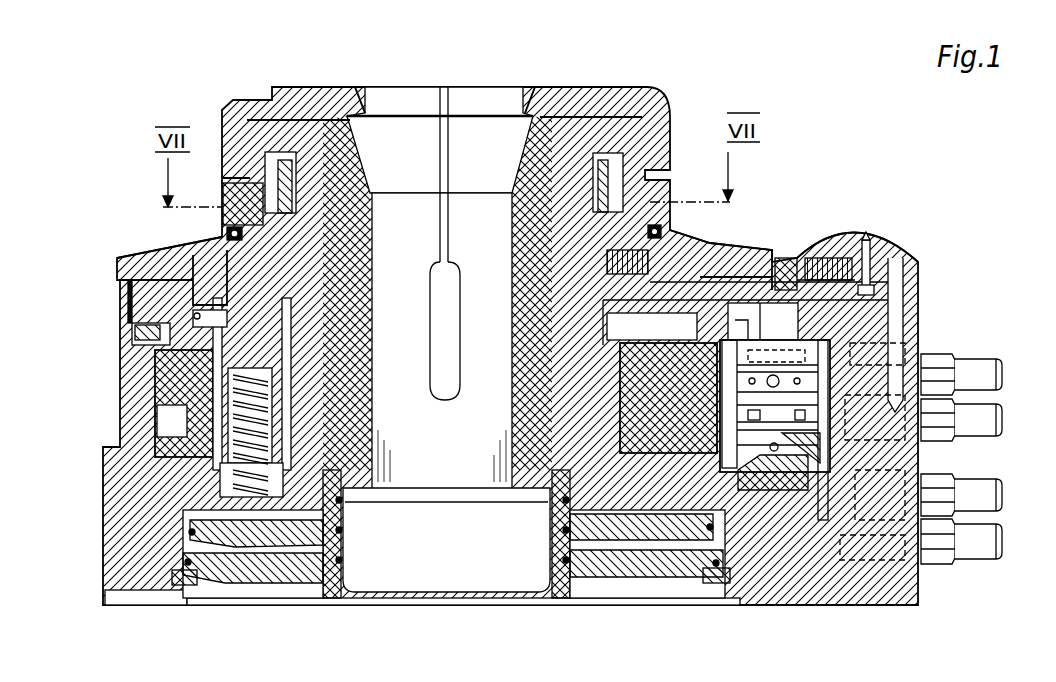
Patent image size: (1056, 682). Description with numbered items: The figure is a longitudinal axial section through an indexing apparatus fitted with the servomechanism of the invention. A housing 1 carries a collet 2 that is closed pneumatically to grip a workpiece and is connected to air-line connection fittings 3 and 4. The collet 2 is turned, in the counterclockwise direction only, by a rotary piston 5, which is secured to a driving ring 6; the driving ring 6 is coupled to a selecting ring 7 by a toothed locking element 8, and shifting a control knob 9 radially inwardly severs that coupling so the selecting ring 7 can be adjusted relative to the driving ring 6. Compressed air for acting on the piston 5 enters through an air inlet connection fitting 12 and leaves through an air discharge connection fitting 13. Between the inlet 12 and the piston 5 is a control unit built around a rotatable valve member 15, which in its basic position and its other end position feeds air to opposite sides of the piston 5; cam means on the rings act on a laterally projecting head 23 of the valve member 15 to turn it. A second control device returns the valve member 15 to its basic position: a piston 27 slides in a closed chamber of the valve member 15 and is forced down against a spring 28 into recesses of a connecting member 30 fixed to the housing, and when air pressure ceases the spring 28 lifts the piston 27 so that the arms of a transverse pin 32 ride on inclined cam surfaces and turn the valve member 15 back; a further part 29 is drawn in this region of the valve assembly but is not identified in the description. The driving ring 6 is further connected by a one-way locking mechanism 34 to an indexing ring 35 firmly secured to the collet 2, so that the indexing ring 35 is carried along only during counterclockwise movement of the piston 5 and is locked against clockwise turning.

The housing 1 is at (143, 492).
The collet 2 is at (442, 452).
The air-line connection fitting 3 is at (983, 500).
The air-line connection fitting 4 is at (980, 545).
The rotary piston 5 is at (188, 380).
The driving ring 6 is at (120, 305).
The selecting ring 7 is at (140, 253).
The toothed locking element 8 is at (703, 250).
The control knob 9 is at (833, 240).
The air inlet connection fitting 12 is at (983, 417).
The air discharge connection fitting 13 is at (985, 375).
The valve member 15 is at (883, 320).
The laterally projecting head 23 is at (778, 322).
The piston 27 is at (875, 283).
The spring 28 is at (767, 440).
The valve body 29 is at (760, 432).
The connecting member 30 is at (737, 460).
The transverse pin 32 is at (752, 462).
The one-way locking mechanism 34 is at (655, 233).
The indexing ring 35 is at (227, 221).